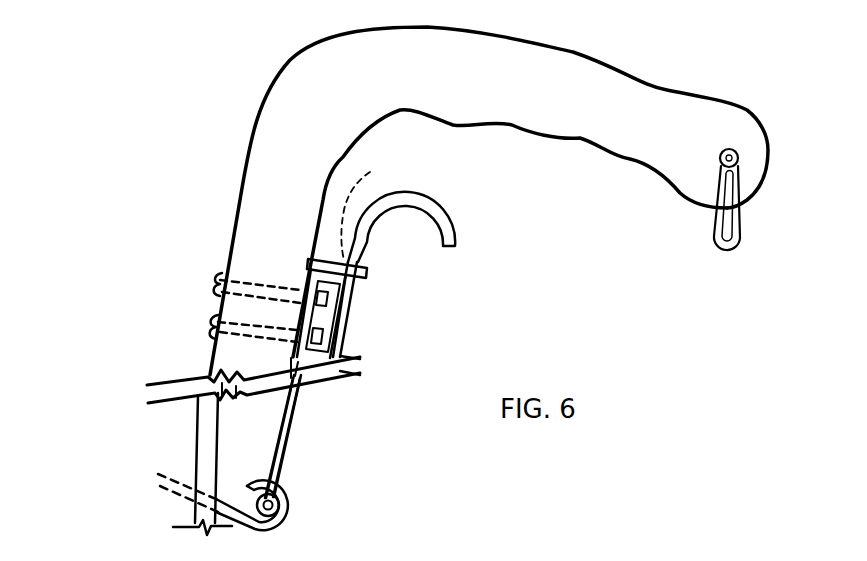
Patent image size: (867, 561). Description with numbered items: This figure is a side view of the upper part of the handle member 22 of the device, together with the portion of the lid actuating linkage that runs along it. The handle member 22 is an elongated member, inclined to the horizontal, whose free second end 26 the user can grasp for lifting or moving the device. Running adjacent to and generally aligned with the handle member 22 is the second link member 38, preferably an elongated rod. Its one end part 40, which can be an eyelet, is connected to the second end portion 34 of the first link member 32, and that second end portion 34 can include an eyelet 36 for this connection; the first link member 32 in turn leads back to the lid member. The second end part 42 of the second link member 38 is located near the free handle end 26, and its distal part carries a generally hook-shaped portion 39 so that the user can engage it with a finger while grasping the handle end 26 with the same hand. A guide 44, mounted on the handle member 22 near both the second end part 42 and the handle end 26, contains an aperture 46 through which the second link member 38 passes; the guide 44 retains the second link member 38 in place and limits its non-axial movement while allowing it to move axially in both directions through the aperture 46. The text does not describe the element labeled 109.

The handle member 22 is at (234, 192).
The free second end 26 is at (512, 127).
The first link member 32 is at (160, 490).
The second end portion 34 is at (293, 513).
The eyelet 36 is at (290, 493).
The second link member 38 is at (343, 333).
The hook-shaped portion 39 is at (460, 228).
The one end part 40 is at (287, 468).
The second end part 42 is at (347, 300).
The guide 44 is at (370, 268).
The aperture 46 is at (369, 205).
The ring loop 109 is at (712, 240).